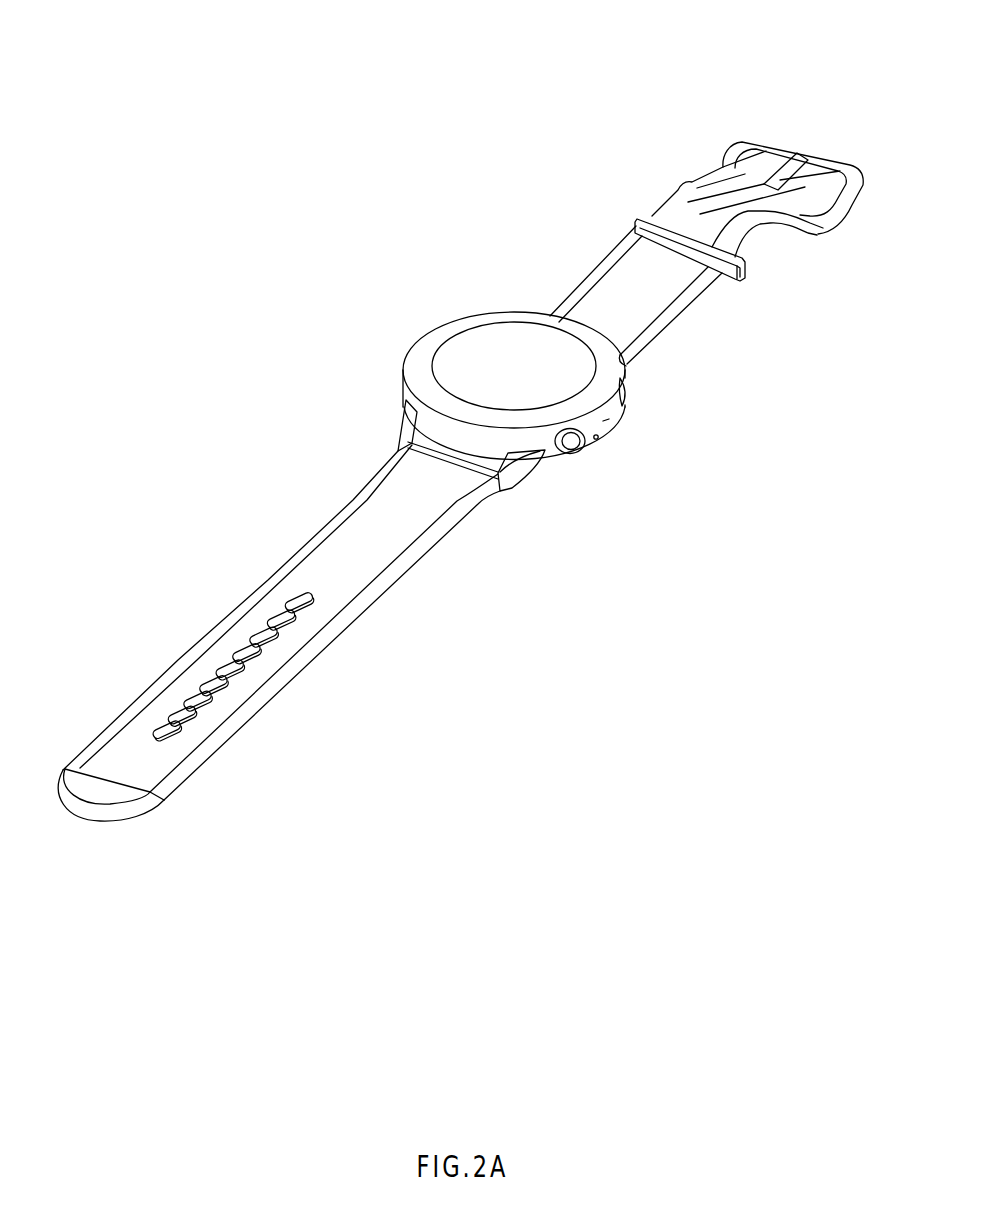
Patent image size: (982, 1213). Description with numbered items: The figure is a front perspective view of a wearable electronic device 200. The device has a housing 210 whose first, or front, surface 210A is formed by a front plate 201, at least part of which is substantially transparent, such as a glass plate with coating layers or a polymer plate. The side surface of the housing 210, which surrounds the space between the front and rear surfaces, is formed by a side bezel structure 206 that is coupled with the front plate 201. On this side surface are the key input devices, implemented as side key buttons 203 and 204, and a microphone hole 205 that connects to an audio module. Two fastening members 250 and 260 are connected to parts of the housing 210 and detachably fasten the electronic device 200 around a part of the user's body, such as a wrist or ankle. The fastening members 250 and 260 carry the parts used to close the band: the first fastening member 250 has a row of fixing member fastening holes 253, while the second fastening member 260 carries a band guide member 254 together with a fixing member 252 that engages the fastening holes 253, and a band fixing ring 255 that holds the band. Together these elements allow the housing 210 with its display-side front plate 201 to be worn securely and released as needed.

The electronic device 200 is at (232, 92).
The front plate 201 is at (463, 355).
The first surface 210A is at (503, 349).
The housing 210 is at (407, 423).
The side key button 203 is at (626, 393).
The side key button 204 is at (573, 446).
The microphone hole 205 is at (598, 438).
The side bezel structure 206 is at (607, 420).
The fastening member 250 is at (115, 762).
The fixing member fastening holes 253 is at (187, 697).
The band guide member 254 is at (729, 152).
The fixing member 252 is at (787, 172).
The band fixing ring 255 is at (645, 220).
The fastening member 260 is at (605, 300).